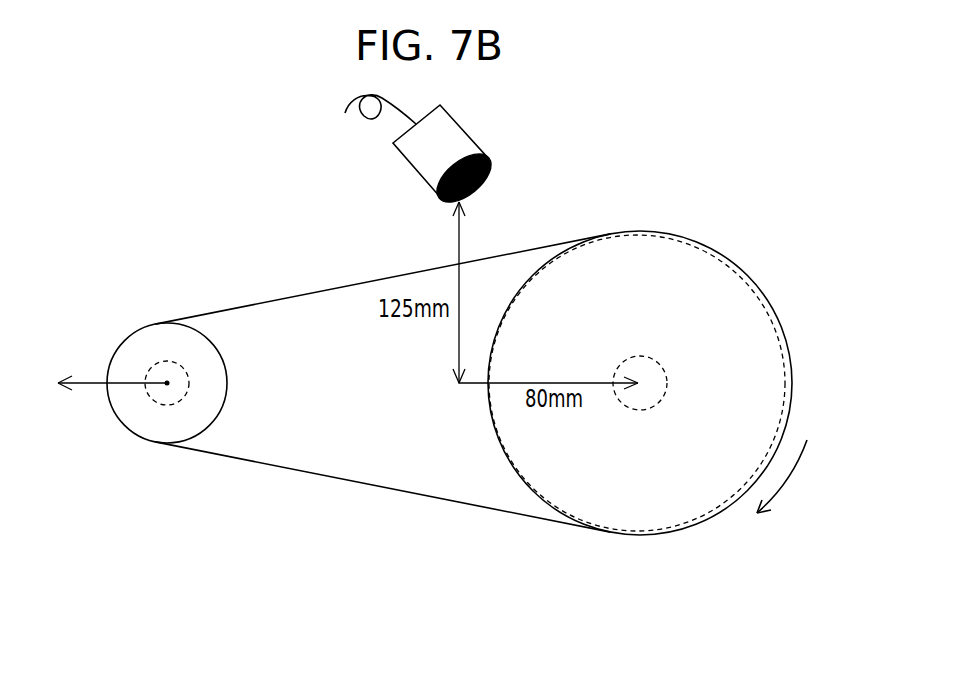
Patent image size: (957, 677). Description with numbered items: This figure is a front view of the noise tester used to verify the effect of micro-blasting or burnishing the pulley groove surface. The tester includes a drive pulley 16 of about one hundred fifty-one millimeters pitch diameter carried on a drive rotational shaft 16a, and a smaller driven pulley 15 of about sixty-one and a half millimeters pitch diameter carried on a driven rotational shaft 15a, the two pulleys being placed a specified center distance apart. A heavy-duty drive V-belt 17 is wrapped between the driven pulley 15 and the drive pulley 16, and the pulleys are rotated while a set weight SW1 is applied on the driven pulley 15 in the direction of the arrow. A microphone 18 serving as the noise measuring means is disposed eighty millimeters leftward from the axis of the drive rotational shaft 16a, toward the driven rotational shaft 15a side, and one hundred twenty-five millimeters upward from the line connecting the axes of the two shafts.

The driven pulley 15 is at (120, 345).
The driven rotational shaft 15a is at (160, 403).
The drive pulley 16 is at (708, 248).
The drive rotational shaft 16a is at (667, 372).
The heavy-duty drive V-belt 17 is at (315, 293).
The microphone 18 is at (468, 121).
The set weight SW1 is at (103, 369).